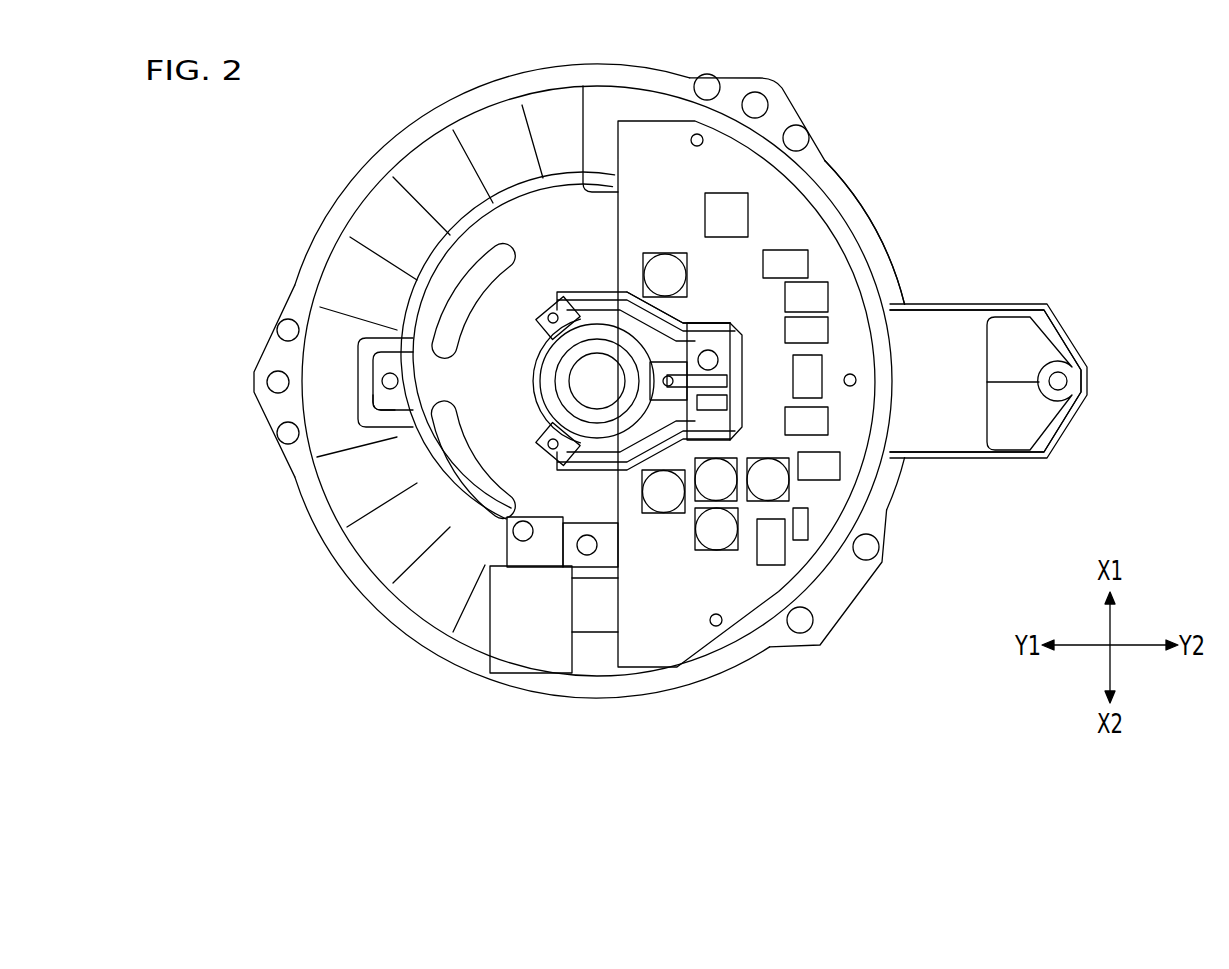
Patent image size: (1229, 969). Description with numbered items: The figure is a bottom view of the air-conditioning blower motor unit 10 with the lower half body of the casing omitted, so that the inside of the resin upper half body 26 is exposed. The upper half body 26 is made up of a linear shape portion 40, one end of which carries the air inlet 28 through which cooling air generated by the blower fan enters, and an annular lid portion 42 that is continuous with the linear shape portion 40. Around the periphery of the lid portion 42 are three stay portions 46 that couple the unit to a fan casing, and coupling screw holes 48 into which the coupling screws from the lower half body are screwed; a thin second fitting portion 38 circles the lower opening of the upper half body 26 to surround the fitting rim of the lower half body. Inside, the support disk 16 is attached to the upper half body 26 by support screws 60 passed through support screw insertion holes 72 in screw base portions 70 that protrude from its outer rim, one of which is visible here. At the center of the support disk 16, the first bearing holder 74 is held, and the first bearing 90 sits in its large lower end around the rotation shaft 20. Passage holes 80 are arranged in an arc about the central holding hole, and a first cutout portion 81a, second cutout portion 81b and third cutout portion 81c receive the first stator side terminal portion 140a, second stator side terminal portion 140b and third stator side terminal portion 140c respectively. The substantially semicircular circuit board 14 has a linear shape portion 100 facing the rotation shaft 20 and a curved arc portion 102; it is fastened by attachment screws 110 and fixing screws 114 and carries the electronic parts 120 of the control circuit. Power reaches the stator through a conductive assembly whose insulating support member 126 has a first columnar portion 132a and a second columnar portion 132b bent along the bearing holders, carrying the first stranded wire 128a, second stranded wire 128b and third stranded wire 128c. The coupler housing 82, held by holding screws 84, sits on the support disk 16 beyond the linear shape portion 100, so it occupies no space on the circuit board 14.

The air-conditioning blower motor unit 10 is at (988, 82).
The circuit board 14 is at (648, 655).
The support disk 16 is at (437, 409).
The rotation shaft 20 is at (590, 378).
The upper half body 26 is at (862, 201).
The air inlet 28 is at (1000, 320).
The second fitting portion 38 is at (975, 303).
The linear shape portion 40 is at (958, 440).
The lid portion 42 is at (330, 240).
The stay portions 46 is at (770, 80).
The coupling screw holes 48 is at (1068, 381).
The support screws 60 is at (400, 378).
The screw base portions 70 is at (405, 343).
The support screw insertion holes 72 is at (385, 404).
The first bearing holder 74 is at (556, 410).
The passage holes 80 is at (532, 238).
The first cutout portion 81a is at (540, 283).
The second cutout portion 81b is at (700, 330).
The third cutout portion 81c is at (447, 468).
The coupler housing 82 is at (530, 666).
The holding screws 84 is at (577, 548).
The first bearing 90 is at (560, 392).
The linear shape portion 100 is at (616, 124).
The curved arc portion 102 is at (806, 190).
The attachment screws 110 is at (694, 136).
The fixing screws 114 is at (730, 345).
The electronic parts 120 is at (668, 272).
The insulating support member 126 is at (623, 294).
The first stranded wire 128a is at (565, 305).
The second stranded wire 128b is at (722, 390).
The third stranded wire 128c is at (578, 472).
The first columnar portion 132a is at (690, 312).
The second columnar portion 132b is at (613, 473).
The first stator side terminal portion 140a is at (540, 323).
The second stator side terminal portion 140b is at (706, 416).
The third stator side terminal portion 140c is at (550, 455).